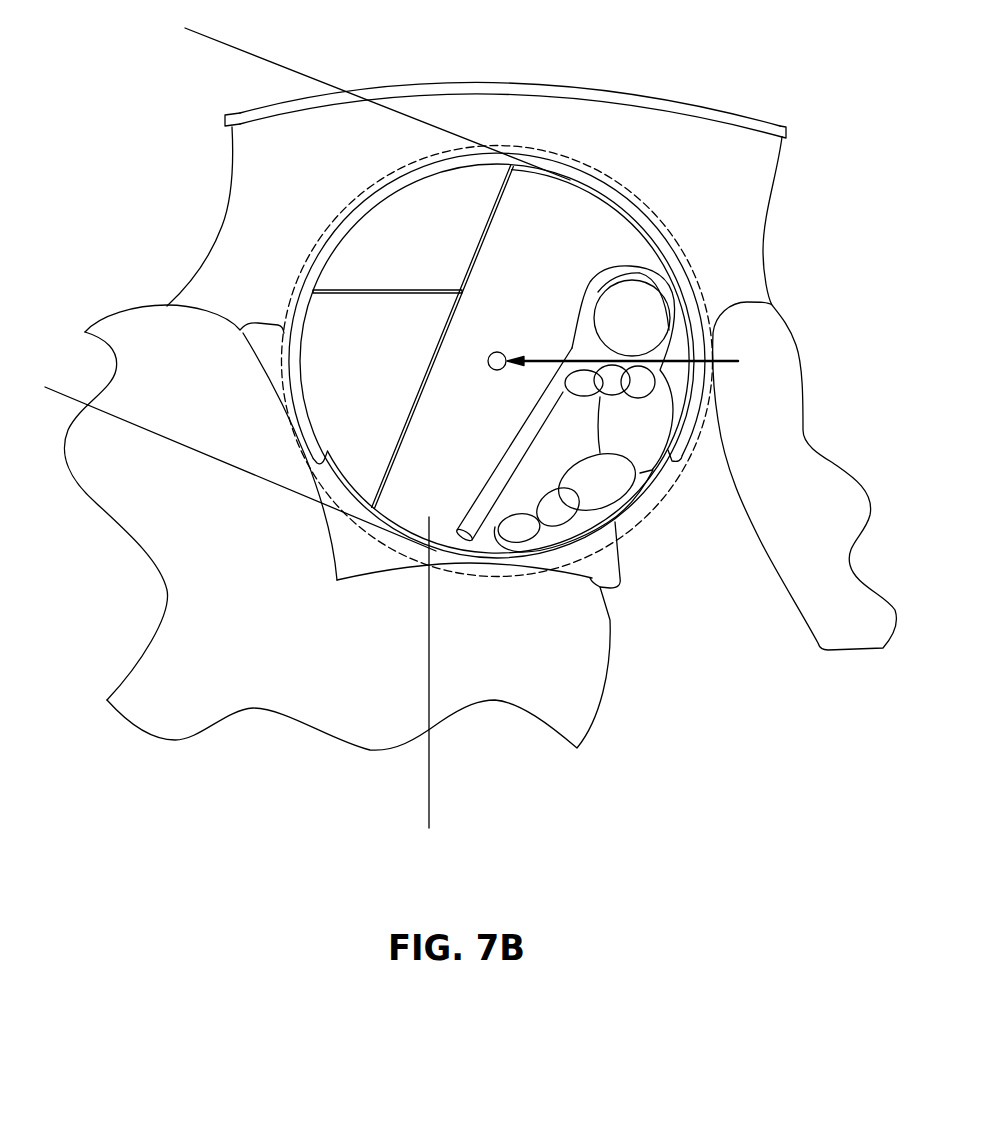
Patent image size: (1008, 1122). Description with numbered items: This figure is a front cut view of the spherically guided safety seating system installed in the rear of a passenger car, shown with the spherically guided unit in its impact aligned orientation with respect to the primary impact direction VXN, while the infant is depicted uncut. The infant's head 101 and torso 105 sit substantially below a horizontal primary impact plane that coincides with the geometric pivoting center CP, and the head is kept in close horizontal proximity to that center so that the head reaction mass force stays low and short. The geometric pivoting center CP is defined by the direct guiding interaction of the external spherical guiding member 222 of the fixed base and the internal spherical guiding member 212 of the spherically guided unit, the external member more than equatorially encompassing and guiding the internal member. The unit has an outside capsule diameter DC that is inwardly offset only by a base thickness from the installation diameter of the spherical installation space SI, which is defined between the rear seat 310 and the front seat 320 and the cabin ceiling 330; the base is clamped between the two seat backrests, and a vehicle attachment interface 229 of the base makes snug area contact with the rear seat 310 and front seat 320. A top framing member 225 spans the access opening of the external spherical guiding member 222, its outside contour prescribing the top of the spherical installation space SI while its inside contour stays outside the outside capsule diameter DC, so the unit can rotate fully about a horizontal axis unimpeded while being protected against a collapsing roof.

The head 101 is at (648, 323).
The torso 105 is at (637, 425).
The internal spherical guiding member 212 is at (412, 677).
The external spherical guiding member 222 is at (382, 396).
The top framing member 225 is at (562, 168).
The vehicle attachment interface 229 is at (355, 542).
The rear seat 310 is at (215, 680).
The front seat 320 is at (823, 618).
The cabin ceiling 330 is at (609, 91).
The geometric pivoting center CP is at (492, 352).
The outside capsule diameter DC is at (45, 387).
The spherical installation space SI is at (592, 557).
The primary impact direction VXN is at (662, 362).